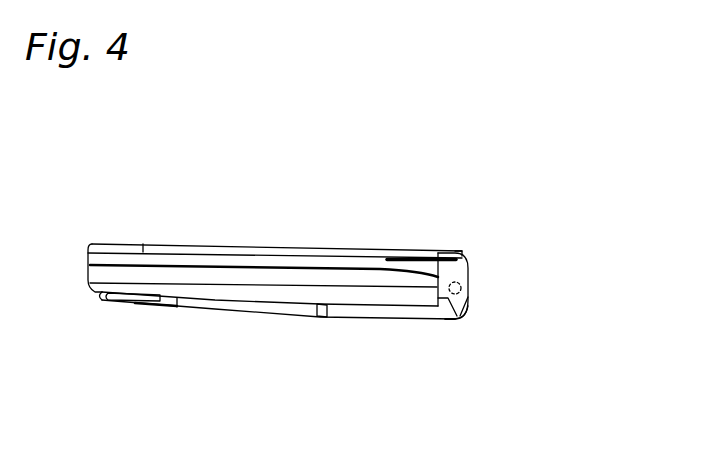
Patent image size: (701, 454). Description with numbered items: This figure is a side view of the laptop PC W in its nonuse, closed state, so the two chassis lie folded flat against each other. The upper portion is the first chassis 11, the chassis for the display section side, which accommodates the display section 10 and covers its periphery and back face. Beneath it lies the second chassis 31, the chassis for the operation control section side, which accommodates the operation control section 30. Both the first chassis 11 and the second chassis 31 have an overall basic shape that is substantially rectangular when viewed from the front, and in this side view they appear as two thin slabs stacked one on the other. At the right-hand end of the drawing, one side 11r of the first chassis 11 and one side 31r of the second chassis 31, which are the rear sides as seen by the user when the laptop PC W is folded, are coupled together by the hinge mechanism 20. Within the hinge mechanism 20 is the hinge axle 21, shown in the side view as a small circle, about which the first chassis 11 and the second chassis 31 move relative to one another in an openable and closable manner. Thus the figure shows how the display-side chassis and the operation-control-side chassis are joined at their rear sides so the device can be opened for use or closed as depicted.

The laptop PC W is at (213, 228).
The display section 10 is at (323, 247).
The chassis for the display section side (first chassis) 11 is at (234, 246).
The one side of the first chassis 11r is at (462, 251).
The hinge mechanism 20 is at (472, 275).
The hinge axle 21 is at (470, 289).
The operation control section 30 is at (313, 318).
The chassis for the operation control section side (second chassis) 31 is at (234, 292).
The one side of the second chassis 31r is at (470, 306).